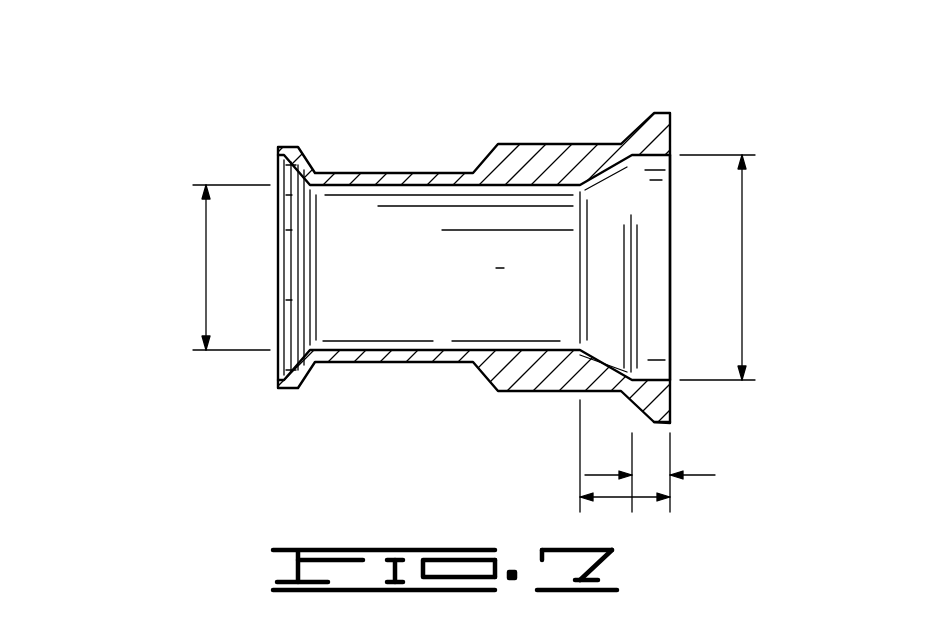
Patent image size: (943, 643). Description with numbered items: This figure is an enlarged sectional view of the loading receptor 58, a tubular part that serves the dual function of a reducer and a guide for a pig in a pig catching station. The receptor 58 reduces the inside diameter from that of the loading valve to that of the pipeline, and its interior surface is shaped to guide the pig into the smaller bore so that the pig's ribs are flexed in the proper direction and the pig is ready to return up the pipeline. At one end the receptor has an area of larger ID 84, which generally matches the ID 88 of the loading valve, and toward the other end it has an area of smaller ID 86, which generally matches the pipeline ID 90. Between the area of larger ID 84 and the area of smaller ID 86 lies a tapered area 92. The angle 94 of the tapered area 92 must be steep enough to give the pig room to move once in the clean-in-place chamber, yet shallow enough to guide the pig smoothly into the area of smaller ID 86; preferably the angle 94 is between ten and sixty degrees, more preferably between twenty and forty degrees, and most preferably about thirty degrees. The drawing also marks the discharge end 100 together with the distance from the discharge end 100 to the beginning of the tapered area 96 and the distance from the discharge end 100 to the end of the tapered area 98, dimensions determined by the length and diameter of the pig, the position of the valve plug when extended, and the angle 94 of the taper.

The loading receptor 58 is at (648, 80).
The area of larger ID 84 is at (647, 382).
The area of smaller ID 86 is at (391, 348).
The ID of the loading valve 88 is at (742, 253).
The pipeline ID 90 is at (204, 253).
The tapered area 92 is at (592, 348).
The angle of the tapered area 94 is at (615, 238).
The distance from the discharge end to the beginning of the tapered area 96 is at (703, 472).
The distance from the discharge end to the end of the tapered area 98 is at (635, 498).
The discharge end 100 is at (670, 400).